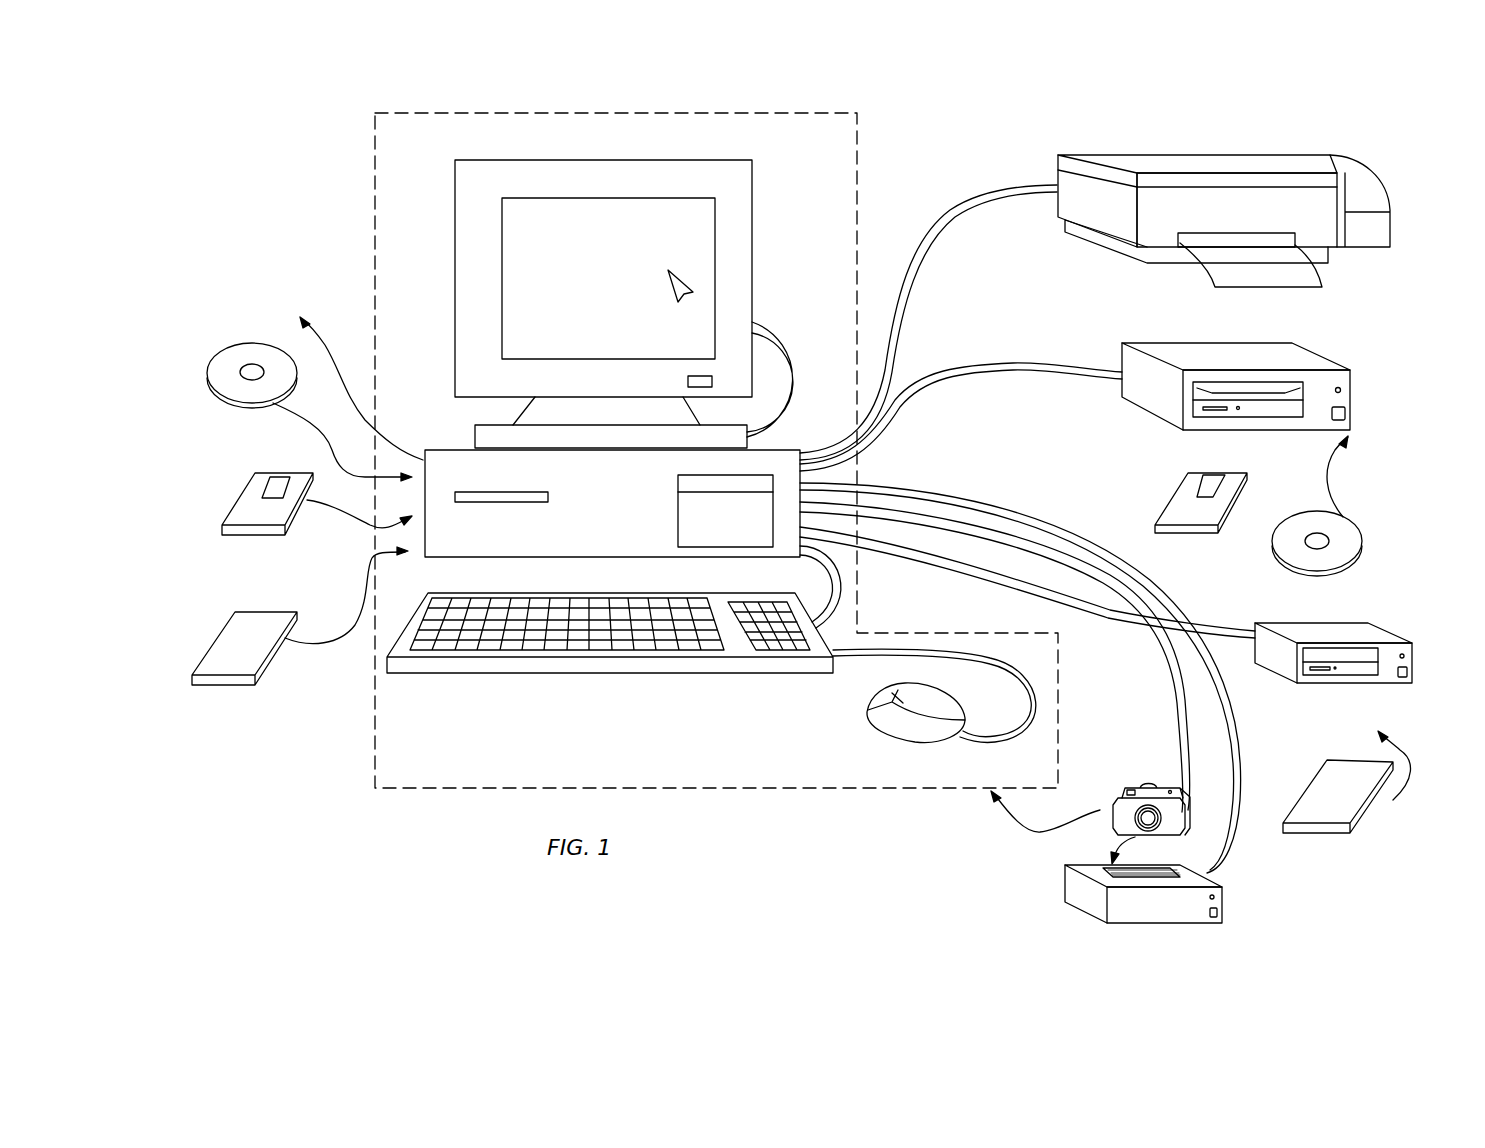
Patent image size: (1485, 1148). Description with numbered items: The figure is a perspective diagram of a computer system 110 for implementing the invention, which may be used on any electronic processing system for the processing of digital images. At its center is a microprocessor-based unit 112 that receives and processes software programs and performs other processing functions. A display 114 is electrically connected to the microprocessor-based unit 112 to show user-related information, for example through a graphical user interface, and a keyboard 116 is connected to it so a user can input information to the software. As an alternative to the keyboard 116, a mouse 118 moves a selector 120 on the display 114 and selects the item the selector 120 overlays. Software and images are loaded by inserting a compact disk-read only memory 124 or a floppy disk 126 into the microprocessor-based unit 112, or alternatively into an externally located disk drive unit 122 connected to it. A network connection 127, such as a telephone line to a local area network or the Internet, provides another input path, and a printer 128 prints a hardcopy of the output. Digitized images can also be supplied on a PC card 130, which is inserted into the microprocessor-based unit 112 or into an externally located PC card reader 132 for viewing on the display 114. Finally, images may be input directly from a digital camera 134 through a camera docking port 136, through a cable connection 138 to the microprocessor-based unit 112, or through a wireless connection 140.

The computer system 110 is at (864, 136).
The microprocessor-based unit 112 is at (452, 448).
The display 114 is at (575, 160).
The keyboard 116 is at (542, 670).
The mouse 118 is at (880, 715).
The selector 120 is at (688, 292).
The externally located disk drive unit 122 is at (1168, 347).
The compact disk-read only memory (CD-ROM) 124 is at (1362, 542).
The floppy disk 126 is at (1178, 490).
The network connection 127 is at (340, 378).
The printer 128 is at (1176, 154).
The personal computer card (PC card) 130 is at (228, 627).
The externally located PC card reader 132 is at (1352, 678).
The digital camera 134 is at (1150, 786).
The camera docking port 136 is at (1085, 903).
The cable connection 138 is at (1004, 578).
The wireless connection 140 is at (1030, 832).